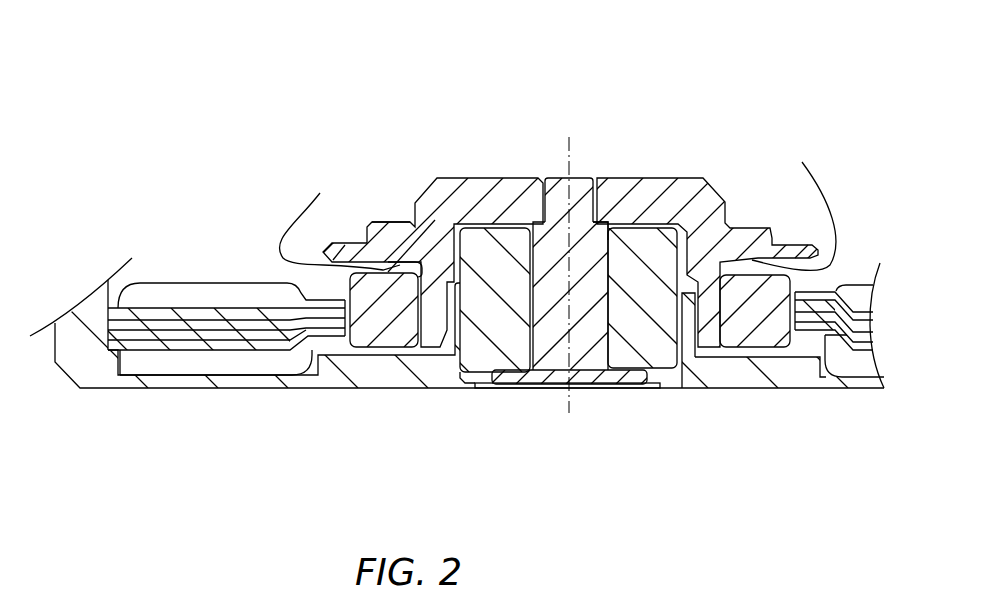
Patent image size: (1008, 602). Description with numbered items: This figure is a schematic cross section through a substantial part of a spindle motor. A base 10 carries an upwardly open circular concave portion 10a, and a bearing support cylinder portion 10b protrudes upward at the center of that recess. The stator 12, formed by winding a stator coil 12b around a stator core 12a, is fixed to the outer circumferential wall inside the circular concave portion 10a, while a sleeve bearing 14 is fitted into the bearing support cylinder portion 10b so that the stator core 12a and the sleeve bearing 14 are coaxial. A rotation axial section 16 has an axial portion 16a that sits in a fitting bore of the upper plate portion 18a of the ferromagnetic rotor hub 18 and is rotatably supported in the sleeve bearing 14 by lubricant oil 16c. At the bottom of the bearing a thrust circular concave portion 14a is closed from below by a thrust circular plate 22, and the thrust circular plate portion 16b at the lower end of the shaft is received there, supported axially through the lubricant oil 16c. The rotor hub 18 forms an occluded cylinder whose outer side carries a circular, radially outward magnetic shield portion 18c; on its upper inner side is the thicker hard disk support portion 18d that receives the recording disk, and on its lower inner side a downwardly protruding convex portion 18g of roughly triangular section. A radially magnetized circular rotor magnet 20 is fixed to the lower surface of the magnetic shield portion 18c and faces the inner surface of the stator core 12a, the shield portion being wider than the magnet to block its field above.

The base 10 is at (379, 370).
The circular concave portion 10a is at (108, 281).
The bearing support cylinder portion 10b is at (689, 327).
The stator 12 is at (226, 262).
The stator core 12a is at (222, 347).
The stator coil 12b is at (178, 362).
The sleeve bearing 14 is at (483, 243).
The thrust circular concave portion 14a is at (510, 380).
The rotation axial section 16 is at (587, 158).
The axial portion 16a is at (588, 330).
The thrust circular plate portion 16b is at (538, 380).
The lubricant oil 16c is at (610, 235).
The rotor hub 18 is at (692, 169).
The upper plate portion 18a is at (503, 195).
The magnetic shield portion 18c is at (358, 240).
The hard disk support portion 18d is at (372, 242).
The convex portion 18g is at (557, 205).
The circular rotor magnet 20 is at (757, 333).
The thrust circular plate 22 is at (628, 387).